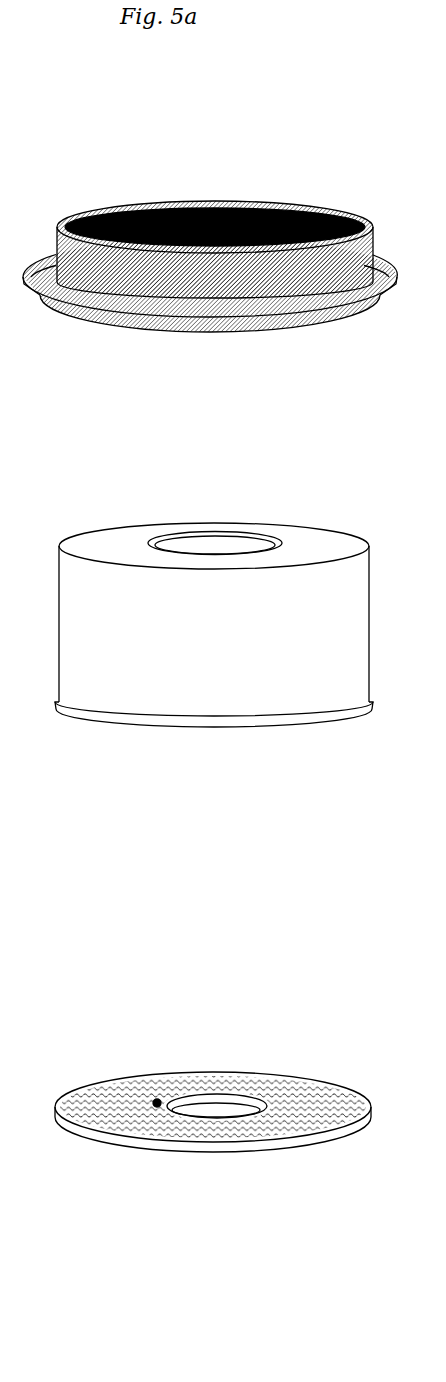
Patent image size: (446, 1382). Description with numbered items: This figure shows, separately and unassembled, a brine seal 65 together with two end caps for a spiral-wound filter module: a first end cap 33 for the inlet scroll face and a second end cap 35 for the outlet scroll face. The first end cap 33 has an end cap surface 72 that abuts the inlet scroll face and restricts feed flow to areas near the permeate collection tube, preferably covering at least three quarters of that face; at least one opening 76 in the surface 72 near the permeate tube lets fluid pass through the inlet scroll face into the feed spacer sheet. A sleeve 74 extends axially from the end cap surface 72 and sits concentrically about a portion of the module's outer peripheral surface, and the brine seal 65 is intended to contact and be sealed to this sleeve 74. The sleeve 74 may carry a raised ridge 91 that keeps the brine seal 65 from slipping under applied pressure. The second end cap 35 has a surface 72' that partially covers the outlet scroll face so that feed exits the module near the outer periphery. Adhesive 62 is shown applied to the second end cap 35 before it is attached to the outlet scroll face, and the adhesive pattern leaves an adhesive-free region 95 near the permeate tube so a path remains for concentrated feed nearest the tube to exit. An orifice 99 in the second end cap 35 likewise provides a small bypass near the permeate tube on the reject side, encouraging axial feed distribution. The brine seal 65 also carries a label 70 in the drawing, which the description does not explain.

The brine seal 65 is at (231, 211).
The flange 70 is at (395, 274).
The first end cap 33 is at (241, 541).
The end cap surface 72 is at (202, 511).
The opening 76 is at (208, 533).
The sleeve 74 is at (365, 637).
The raised ridge 91 is at (372, 702).
The second end cap 35 is at (233, 1019).
The adhesive-free region 95 is at (230, 1090).
The surface 72' is at (213, 1064).
The adhesive 62 is at (314, 1088).
The orifice 99 is at (157, 1103).